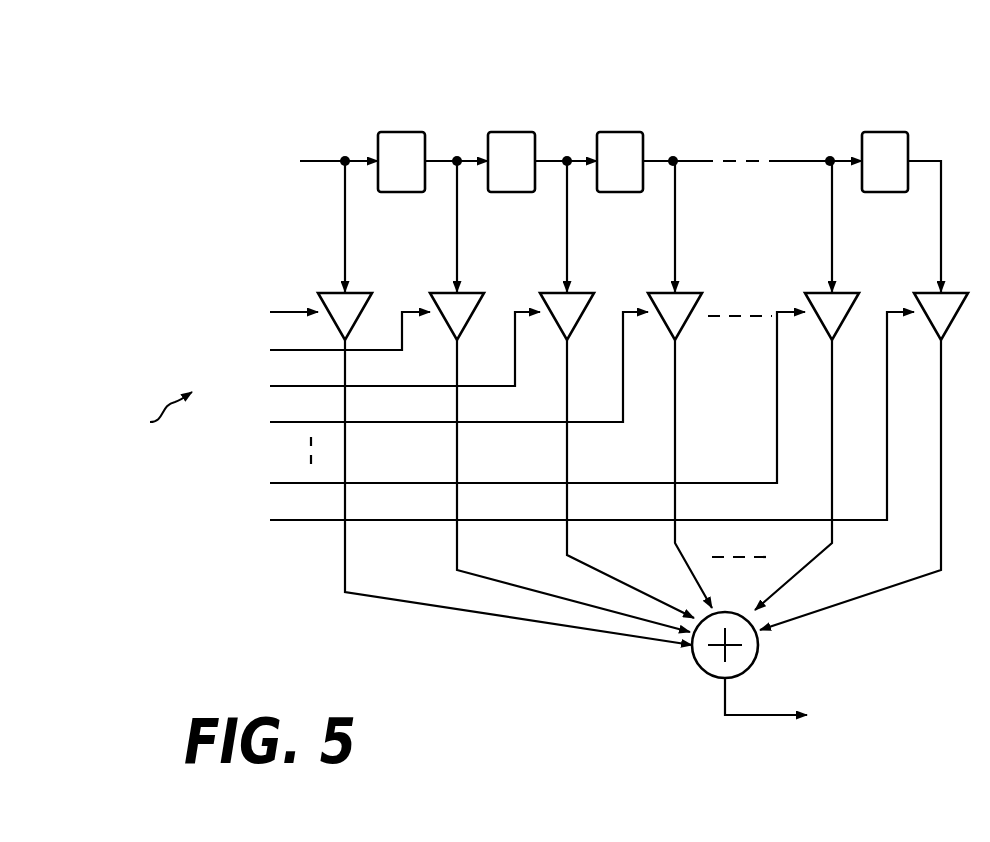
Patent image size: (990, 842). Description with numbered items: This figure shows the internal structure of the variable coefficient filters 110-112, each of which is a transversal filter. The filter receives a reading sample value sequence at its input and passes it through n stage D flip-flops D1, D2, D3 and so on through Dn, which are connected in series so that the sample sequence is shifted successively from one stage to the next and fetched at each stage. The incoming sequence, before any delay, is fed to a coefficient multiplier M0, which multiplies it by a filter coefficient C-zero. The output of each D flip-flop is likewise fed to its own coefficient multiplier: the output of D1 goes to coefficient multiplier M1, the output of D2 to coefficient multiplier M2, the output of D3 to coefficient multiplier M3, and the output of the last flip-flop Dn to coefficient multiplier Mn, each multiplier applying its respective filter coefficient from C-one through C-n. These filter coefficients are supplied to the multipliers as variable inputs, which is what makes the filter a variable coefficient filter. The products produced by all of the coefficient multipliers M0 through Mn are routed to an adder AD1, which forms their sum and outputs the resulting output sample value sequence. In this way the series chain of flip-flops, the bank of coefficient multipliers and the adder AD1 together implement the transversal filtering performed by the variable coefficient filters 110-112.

The variable coefficient filters 110-112 is at (776, 45).
The D flip-flop D1 is at (404, 131).
The D flip-flop D2 is at (515, 131).
The D flip-flop D3 is at (624, 131).
The D flip-flop Dn is at (889, 131).
The coefficient multiplier M0 is at (362, 290).
The coefficient multiplier M1 is at (474, 290).
The coefficient multiplier M2 is at (584, 290).
The coefficient multiplier M3 is at (692, 290).
The coefficient multiplier Mn is at (958, 290).
The adder AD1 is at (758, 645).